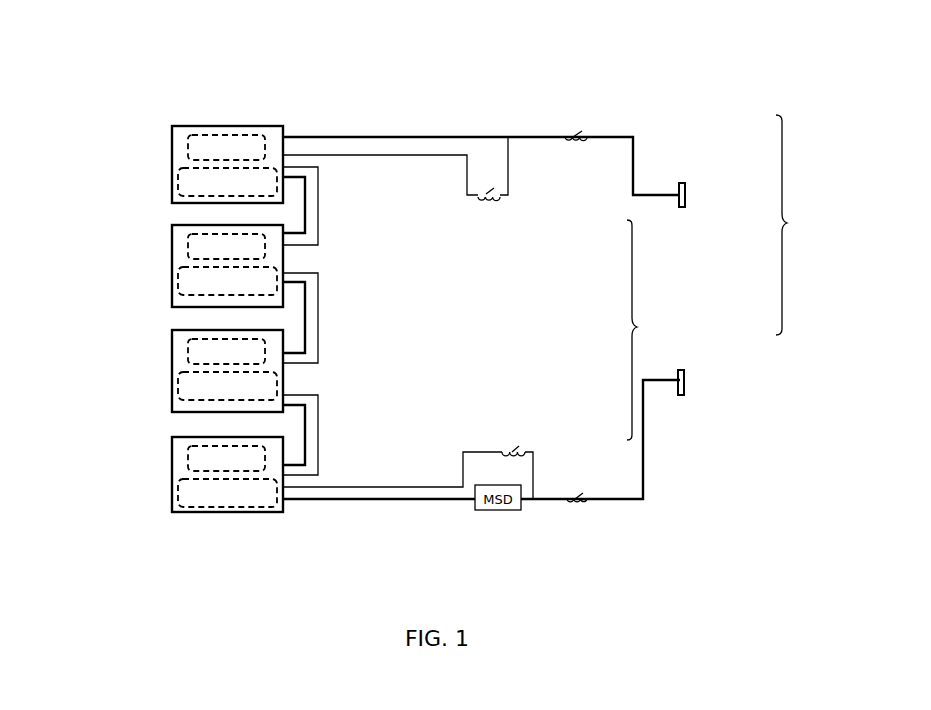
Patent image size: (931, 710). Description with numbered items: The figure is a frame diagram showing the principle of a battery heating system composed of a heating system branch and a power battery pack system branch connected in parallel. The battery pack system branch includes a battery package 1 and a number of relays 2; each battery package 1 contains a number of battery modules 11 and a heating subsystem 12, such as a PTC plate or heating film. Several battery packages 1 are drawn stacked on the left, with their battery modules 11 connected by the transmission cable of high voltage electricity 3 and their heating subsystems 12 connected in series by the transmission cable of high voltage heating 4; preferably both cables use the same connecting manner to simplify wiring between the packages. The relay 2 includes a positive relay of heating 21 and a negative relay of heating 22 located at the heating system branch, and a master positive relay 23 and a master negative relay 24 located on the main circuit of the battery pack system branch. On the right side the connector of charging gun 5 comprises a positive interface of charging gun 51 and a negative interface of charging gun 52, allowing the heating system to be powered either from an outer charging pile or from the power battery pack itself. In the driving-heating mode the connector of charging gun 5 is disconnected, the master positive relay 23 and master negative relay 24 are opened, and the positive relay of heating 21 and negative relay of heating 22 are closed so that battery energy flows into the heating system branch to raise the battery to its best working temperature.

The battery package 1 is at (178, 157).
The battery module 11 is at (238, 142).
The heating subsystem 12 is at (173, 193).
The relay 2 is at (643, 330).
The positive relay of heating 21 is at (500, 210).
The negative relay of heating 22 is at (507, 445).
The master positive relay 23 is at (565, 150).
The master negative relay 24 is at (575, 492).
The transmission cable of high voltage electricity 3 is at (445, 137).
The transmission cable of high voltage heating 4 is at (333, 157).
The connector of charging gun 5 is at (793, 225).
The positive interface of charging gun 51 is at (685, 197).
The negative interface of charging gun 52 is at (685, 378).